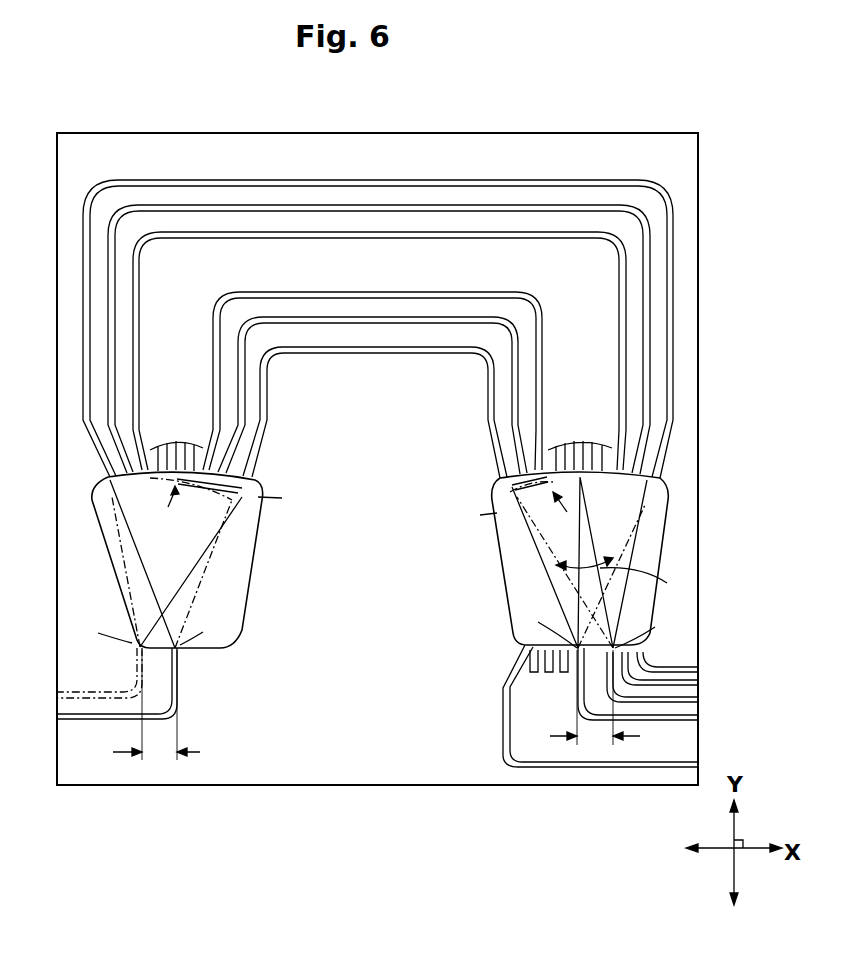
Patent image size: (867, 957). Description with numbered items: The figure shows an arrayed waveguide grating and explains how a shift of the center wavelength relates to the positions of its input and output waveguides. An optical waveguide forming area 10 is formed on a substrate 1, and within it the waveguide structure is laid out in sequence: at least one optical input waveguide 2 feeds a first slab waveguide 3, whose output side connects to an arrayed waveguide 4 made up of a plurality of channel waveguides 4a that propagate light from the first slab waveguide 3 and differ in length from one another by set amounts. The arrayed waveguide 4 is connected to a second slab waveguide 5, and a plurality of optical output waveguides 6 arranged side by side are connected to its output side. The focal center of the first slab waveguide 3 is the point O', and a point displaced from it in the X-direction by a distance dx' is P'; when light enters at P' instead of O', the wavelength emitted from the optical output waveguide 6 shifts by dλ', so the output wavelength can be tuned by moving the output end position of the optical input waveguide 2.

The substrate 1 is at (698, 328).
The optical input waveguide 2 is at (82, 688).
The first slab waveguide 3 is at (105, 545).
The arrayed waveguide 4 is at (530, 165).
The channel waveguide 4a is at (673, 187).
The second slab waveguide 5 is at (653, 520).
The optical output waveguide 6 is at (678, 668).
The optical waveguide forming area 10 is at (685, 468).